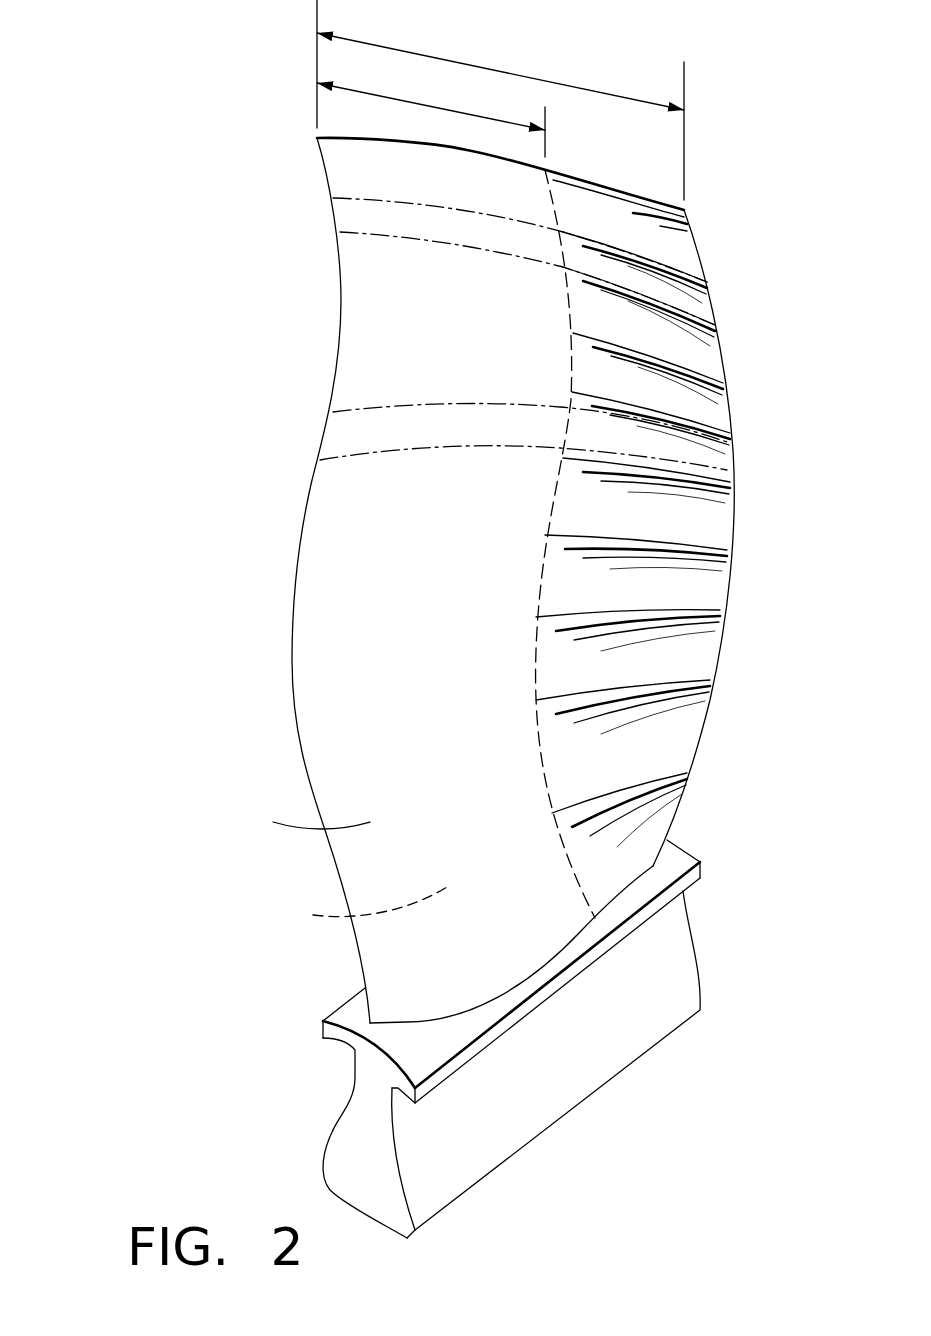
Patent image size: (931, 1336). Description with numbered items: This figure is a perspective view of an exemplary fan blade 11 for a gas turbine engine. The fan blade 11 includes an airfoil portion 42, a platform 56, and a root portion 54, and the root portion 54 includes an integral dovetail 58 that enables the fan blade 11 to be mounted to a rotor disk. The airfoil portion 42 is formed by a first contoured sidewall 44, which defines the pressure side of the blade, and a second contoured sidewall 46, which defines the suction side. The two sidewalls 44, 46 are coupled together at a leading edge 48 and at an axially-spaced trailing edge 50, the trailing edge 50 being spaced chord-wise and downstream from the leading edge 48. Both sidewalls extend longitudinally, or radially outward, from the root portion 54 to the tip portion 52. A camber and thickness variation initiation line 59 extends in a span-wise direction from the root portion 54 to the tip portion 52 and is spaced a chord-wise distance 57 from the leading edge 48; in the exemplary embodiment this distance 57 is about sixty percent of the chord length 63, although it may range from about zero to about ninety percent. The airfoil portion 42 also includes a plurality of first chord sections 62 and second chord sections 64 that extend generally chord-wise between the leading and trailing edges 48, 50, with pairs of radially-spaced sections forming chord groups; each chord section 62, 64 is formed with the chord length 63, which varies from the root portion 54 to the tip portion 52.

The fan blade 11 is at (183, 72).
The airfoil portion 42 is at (313, 297).
The first contoured sidewall 44 is at (361, 909).
The second contoured sidewall 46 is at (303, 822).
The leading edge 48 is at (292, 615).
The trailing edge 50 is at (730, 548).
The tip portion 52 is at (397, 136).
The root portion 54 is at (699, 824).
The platform 56 is at (387, 1060).
The chord-wise distance 57 is at (418, 100).
The dovetail 58 is at (705, 965).
The camber and thickness variation initiation line 59 is at (556, 207).
The first chord sections 62 is at (423, 205).
The chord length 63 is at (493, 67).
The second chord sections 64 is at (367, 235).